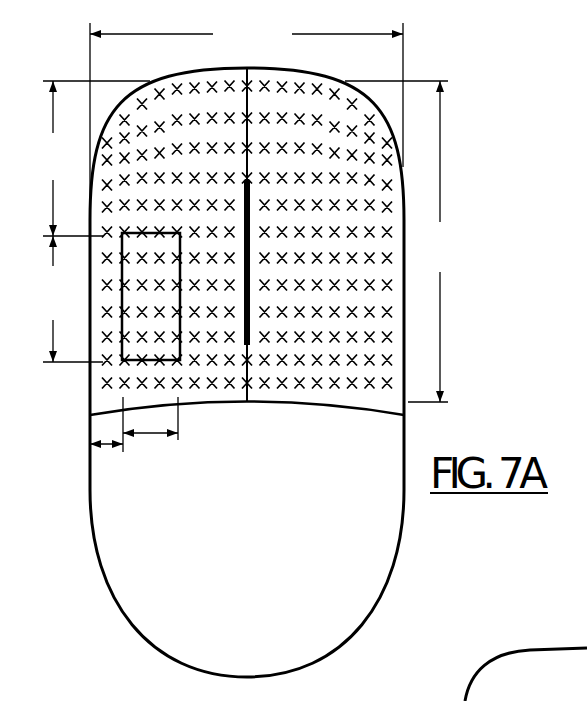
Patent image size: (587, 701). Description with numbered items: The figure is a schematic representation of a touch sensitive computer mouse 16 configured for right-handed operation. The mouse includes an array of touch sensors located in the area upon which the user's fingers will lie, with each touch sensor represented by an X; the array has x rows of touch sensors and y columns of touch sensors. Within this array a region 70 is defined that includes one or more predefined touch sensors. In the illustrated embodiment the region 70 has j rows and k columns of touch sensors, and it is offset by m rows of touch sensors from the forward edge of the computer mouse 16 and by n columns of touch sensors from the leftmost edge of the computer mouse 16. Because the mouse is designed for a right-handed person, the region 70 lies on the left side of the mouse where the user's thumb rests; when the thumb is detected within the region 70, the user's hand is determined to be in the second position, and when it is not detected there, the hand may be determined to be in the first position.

The touch sensitive computer mouse 16 is at (427, 60).
The region 70 is at (150, 338).
The x rows of touch sensors x is at (403, 241).
The y columns of touch sensors y is at (246, 113).
The m rows of touch sensors m is at (92, 158).
The j rows of touch sensors j is at (68, 299).
The k columns of touch sensors k is at (157, 441).
The n columns of touch sensors n is at (105, 447).